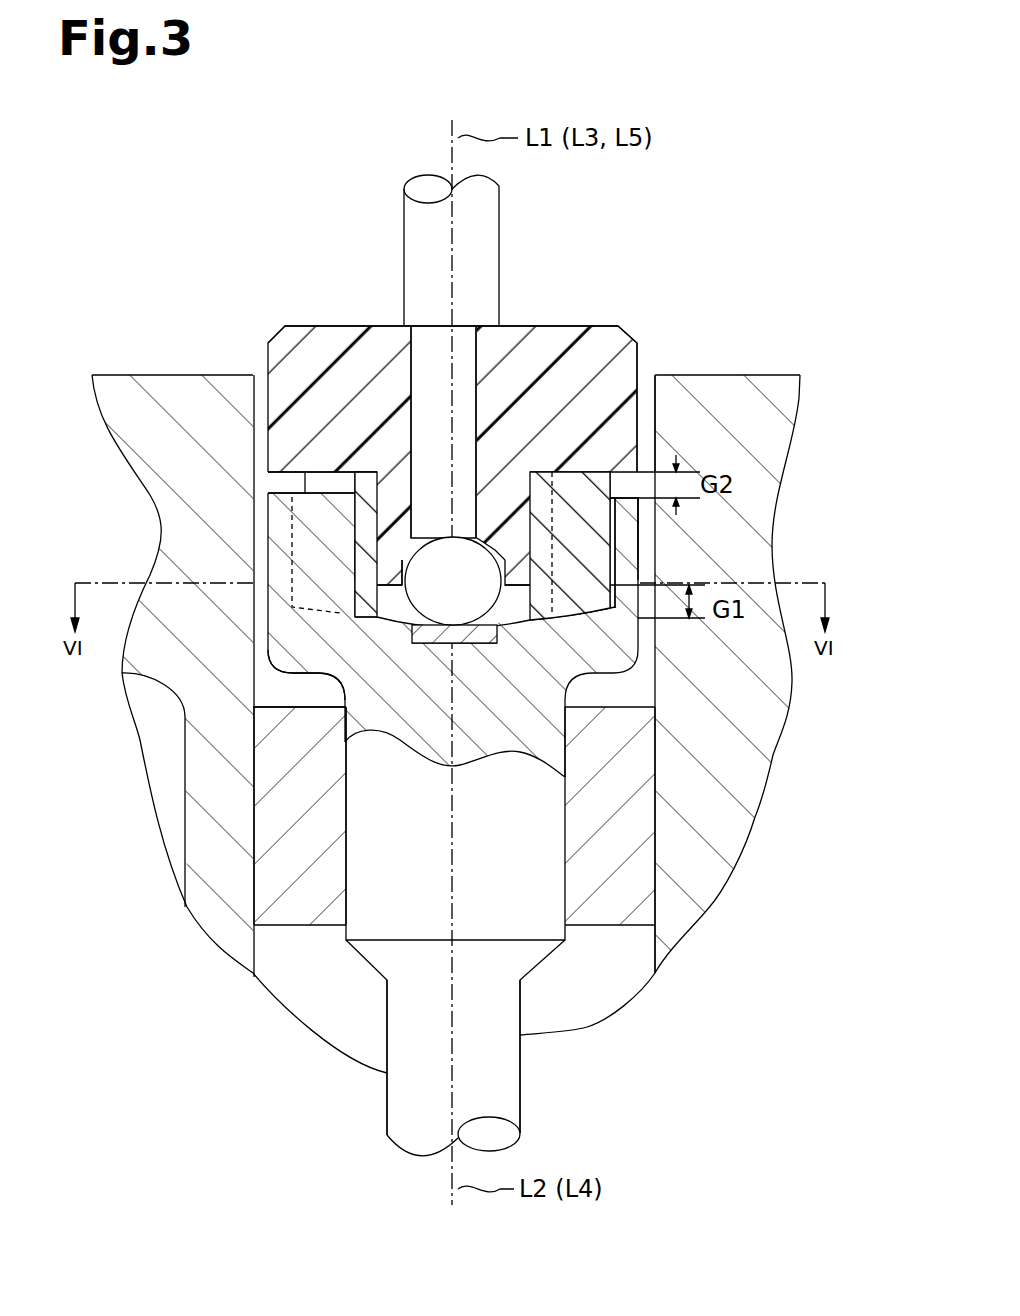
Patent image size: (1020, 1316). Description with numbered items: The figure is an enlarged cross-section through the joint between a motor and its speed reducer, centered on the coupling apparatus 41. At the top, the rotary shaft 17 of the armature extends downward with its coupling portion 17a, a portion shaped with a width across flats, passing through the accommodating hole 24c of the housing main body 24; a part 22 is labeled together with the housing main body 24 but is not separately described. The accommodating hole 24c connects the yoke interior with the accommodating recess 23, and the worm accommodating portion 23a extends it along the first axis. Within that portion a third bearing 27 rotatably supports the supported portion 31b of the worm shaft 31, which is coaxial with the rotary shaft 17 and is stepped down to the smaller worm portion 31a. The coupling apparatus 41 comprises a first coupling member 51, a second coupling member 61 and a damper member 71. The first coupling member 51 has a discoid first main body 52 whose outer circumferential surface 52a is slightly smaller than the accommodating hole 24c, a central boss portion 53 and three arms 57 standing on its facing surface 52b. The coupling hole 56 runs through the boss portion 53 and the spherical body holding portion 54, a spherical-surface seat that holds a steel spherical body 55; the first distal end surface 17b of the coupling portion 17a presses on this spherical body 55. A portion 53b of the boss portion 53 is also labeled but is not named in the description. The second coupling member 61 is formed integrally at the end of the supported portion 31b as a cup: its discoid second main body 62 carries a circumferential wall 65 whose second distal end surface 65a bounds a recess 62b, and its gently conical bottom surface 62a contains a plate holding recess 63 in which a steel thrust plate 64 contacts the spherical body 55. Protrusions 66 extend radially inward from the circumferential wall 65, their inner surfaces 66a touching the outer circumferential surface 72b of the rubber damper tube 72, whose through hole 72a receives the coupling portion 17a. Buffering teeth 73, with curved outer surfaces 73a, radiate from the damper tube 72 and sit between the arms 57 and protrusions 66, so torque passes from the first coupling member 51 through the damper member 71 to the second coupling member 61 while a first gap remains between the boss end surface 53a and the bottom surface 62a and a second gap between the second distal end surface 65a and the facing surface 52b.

The rotary shaft 17 is at (481, 400).
The coupling portion 17a is at (478, 400).
The first distal end surface 17b is at (427, 543).
The valve body 22 is at (660, 705).
The accommodating recess 23 is at (153, 790).
The worm accommodating portion 23a is at (202, 855).
The housing main body 24 is at (482, 724).
The accommodating hole 24c is at (655, 393).
The third bearing 27 is at (641, 769).
The worm shaft 31 is at (454, 931).
The worm portion 31a is at (388, 1109).
The supported portion 31b is at (350, 816).
The coupling apparatus 41 is at (575, 320).
The first coupling member 51 is at (440, 429).
The first main body 52 is at (637, 345).
The outer circumferential surface 52a is at (268, 345).
The facing surface 52b is at (268, 476).
The boss portion 53 is at (455, 571).
The boss end surface 53a is at (360, 626).
The inner peripheral surface of elastic member 53b is at (355, 527).
The spherical body holding portion 54 is at (478, 550).
The spherical body 55 is at (503, 640).
The coupling hole 56 is at (412, 383).
The arm 57 is at (310, 472).
The second coupling member 61 is at (448, 630).
The second main body 62 is at (322, 675).
The bottom surface 62a is at (546, 622).
The recess 62b is at (612, 608).
The plate holding recess 63 is at (424, 643).
The thrust plate 64 is at (468, 643).
The circumferential wall 65 is at (644, 558).
The second distal end surface 65a is at (268, 493).
The protrusion 66 is at (302, 606).
The inner surface 66a is at (355, 557).
The damper member 71 is at (516, 539).
The damper tube 72 is at (366, 472).
The through hole 72a is at (544, 432).
The outer circumferential surface 72b is at (352, 618).
The buffering tooth 73 is at (600, 478).
The outer surface 73a is at (642, 535).